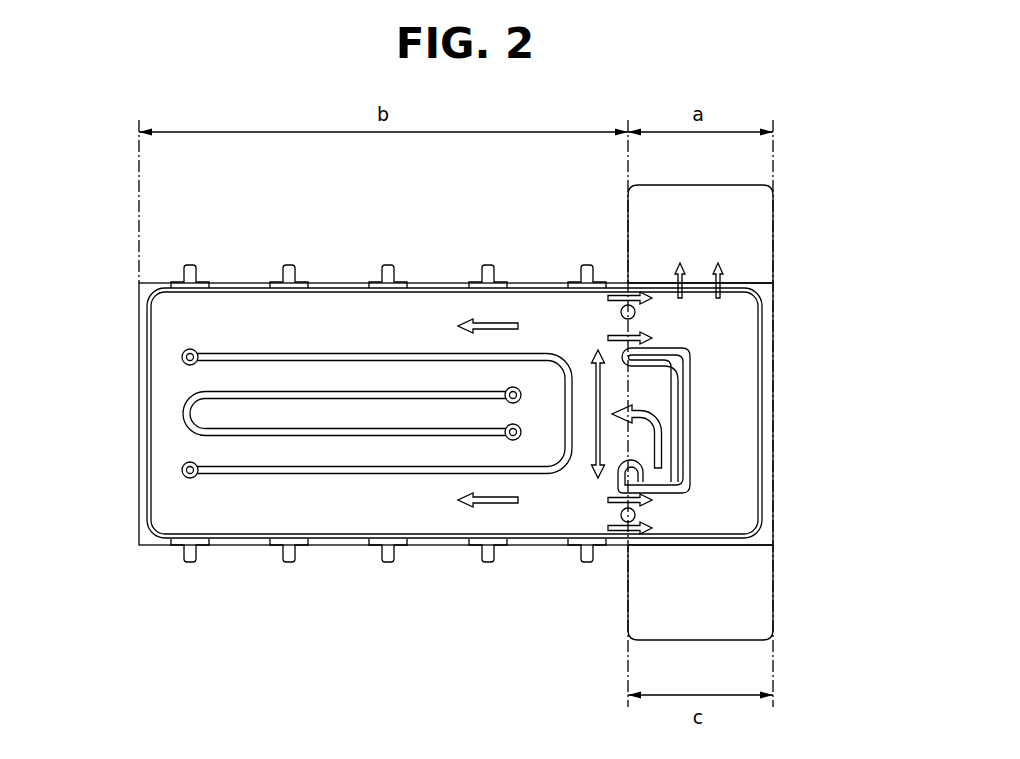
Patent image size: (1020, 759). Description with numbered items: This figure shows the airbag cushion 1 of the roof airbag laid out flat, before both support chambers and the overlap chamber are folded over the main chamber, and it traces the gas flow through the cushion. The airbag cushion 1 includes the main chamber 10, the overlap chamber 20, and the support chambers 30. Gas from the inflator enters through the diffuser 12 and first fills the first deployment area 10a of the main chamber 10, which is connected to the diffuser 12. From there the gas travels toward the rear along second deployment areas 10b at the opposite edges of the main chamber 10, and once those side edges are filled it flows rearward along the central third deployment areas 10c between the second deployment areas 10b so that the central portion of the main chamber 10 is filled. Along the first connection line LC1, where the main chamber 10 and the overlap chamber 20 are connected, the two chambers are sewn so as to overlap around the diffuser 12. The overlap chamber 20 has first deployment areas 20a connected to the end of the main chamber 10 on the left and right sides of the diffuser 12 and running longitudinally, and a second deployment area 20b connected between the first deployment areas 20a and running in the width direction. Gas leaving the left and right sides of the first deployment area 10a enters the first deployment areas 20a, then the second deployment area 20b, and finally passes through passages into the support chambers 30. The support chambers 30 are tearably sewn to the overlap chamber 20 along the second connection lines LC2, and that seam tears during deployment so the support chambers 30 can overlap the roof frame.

The airbag cushion 1 is at (131, 400).
The main chamber 10 is at (240, 283).
The first deployment area 10a is at (622, 391).
The second deployment areas 10b is at (429, 330).
The third deployment areas 10c is at (331, 376).
The diffuser 12 is at (677, 423).
The overlap chamber 20 is at (765, 465).
The first deployment areas 20a is at (667, 327).
The second deployment area 20b is at (726, 400).
The support chambers 30 is at (758, 203).
The first connection line LC1 is at (620, 327).
The second connection lines LC2 is at (700, 281).